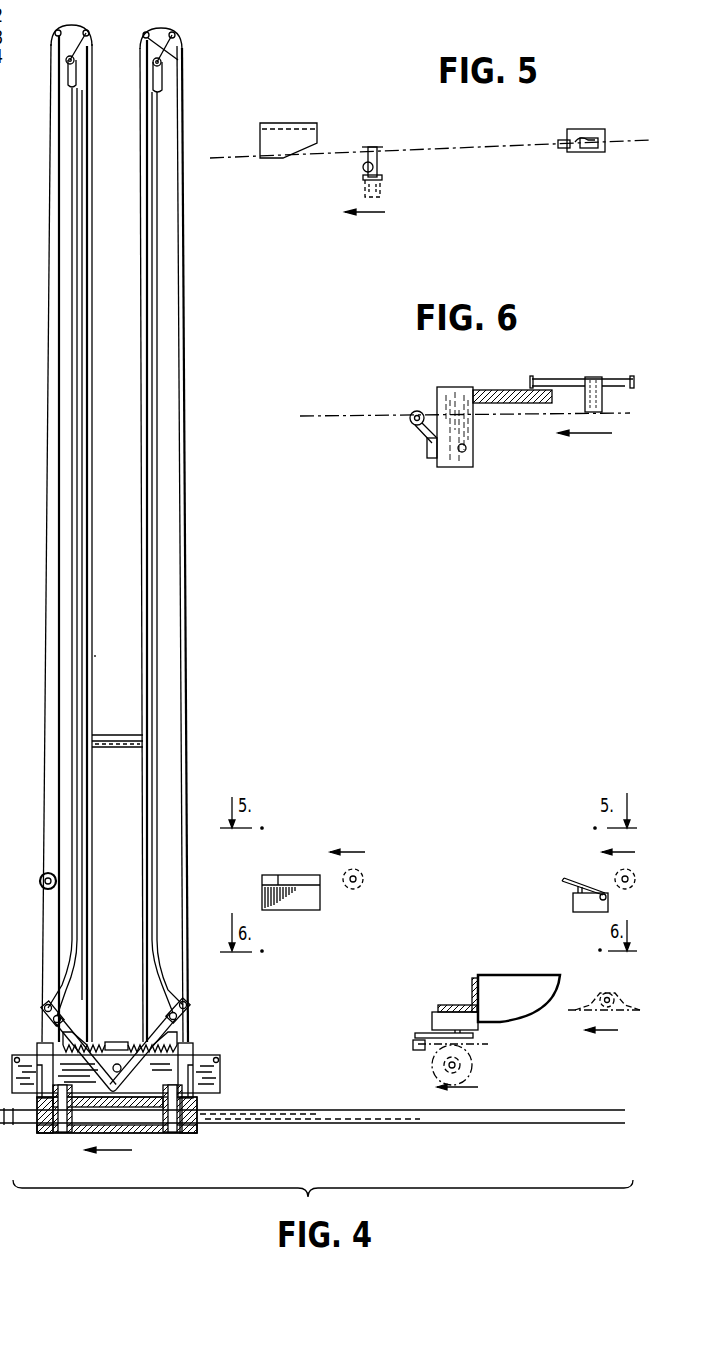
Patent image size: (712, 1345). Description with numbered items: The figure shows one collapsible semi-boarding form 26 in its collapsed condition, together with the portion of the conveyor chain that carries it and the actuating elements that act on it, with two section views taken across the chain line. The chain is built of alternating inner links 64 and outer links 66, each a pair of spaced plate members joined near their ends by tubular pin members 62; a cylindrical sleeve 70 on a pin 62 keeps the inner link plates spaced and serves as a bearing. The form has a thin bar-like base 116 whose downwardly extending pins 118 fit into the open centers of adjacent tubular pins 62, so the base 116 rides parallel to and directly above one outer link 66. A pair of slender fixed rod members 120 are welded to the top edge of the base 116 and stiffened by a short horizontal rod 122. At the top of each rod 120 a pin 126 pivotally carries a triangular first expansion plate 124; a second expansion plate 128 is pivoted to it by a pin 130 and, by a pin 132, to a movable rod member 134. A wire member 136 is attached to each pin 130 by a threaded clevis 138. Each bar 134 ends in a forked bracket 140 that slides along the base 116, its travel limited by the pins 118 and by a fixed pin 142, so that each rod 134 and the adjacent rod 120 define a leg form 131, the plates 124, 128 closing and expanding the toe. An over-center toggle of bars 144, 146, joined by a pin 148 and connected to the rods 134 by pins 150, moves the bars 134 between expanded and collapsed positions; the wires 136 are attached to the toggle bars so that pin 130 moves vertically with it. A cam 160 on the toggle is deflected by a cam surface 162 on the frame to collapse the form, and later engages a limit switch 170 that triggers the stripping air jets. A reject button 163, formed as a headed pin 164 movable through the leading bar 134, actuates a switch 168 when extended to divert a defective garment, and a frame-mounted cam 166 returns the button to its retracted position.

In FIG. 4, the collapsible semi-boarding form 26 is at (112, 42).
In FIG. 4, the tubular pin member 62 is at (66, 1133).
In FIG. 4, the inner link 64 is at (220, 1131).
In FIG. 4, the outer link 66 is at (150, 1133).
In FIG. 4, the cylindrical sleeve 70 is at (40, 1133).
In FIG. 4, the base 116 is at (218, 1084).
In FIG. 4, the downwardly extending pin 118 is at (60, 1134).
In FIG. 4, the fixed rod member 120 is at (145, 422).
In FIG. 4, the horizontal rod 122 is at (121, 735).
In FIG. 4, the first expansion plate 124 is at (68, 62).
In FIG. 4, the pin 126 is at (72, 43).
In FIG. 4, the second expansion plate 128 is at (168, 44).
In FIG. 4, the pin 130 is at (153, 62).
In FIG. 4, the leg form 131 is at (135, 665).
In FIG. 4, the pin 132 is at (55, 33).
In FIG. 4, the movable rod member 134 is at (53, 143).
In FIG. 5, the movable rod member 134 is at (363, 167).
In FIG. 4, the wire member 136 is at (155, 292).
In FIG. 4, the threaded clevis 138 is at (162, 80).
In FIG. 4, the forked bracket 140 is at (37, 1050).
In FIG. 4, the fixed pin 142 is at (219, 1060).
In FIG. 4, the toggle bar 144 is at (92, 1040).
In FIG. 4, the toggle bar 146 is at (135, 1030).
In FIG. 4, the pin 148 is at (121, 1068).
In FIG. 4, the pin 150 is at (213, 994).
In FIG. 4, the cam 160 is at (128, 1024).
In FIG. 6, the cam 160 is at (588, 398).
In FIG. 4, the cam surface 162 is at (533, 1012).
In FIG. 4, the reject button 163 is at (42, 874).
In FIG. 5, the reject button 163 is at (382, 181).
In FIG. 5, the headed pin 164 is at (380, 150).
In FIG. 4, the cam 166 is at (298, 875).
In FIG. 5, the cam 166 is at (280, 158).
In FIG. 4, the switch 168 is at (573, 903).
In FIG. 5, the switch 168 is at (585, 152).
In FIG. 4, the limit switch 170 is at (432, 1022).
In FIG. 6, the limit switch 170 is at (427, 448).